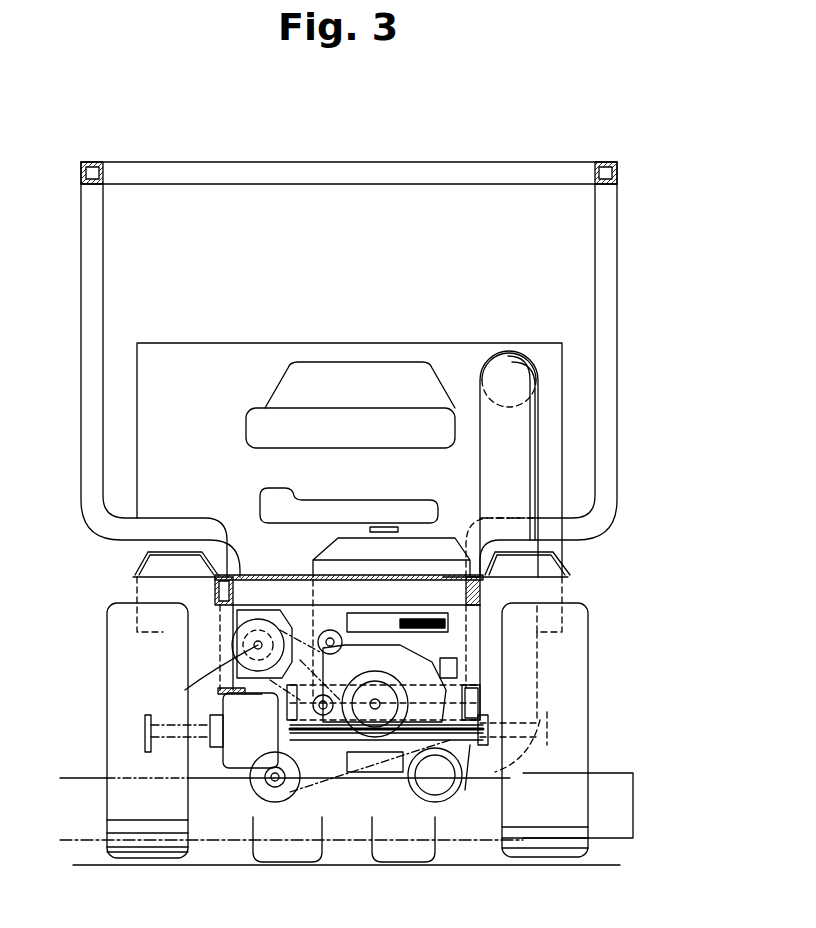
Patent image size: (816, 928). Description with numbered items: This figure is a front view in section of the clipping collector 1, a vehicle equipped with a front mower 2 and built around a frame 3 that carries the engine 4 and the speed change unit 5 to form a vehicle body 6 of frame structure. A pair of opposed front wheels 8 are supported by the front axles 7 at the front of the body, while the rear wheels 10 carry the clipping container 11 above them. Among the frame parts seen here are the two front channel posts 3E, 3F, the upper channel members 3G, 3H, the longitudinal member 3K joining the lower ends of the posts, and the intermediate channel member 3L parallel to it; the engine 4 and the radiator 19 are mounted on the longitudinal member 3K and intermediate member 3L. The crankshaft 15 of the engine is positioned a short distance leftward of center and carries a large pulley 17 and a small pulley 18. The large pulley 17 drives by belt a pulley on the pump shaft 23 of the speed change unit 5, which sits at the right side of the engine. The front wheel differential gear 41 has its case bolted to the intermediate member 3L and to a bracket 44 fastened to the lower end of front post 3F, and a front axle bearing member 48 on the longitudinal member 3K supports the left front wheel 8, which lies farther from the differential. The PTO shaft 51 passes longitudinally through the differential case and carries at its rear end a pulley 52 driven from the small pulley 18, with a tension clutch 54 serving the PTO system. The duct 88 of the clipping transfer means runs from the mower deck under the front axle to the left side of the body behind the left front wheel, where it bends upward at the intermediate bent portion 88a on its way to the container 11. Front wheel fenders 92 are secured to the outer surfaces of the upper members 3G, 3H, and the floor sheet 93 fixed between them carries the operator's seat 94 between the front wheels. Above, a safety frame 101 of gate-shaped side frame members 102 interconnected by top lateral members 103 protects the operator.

The clipping collector 1 is at (374, 339).
The front mower 2 is at (607, 772).
The frame 3 is at (352, 622).
The front channel post 3E is at (480, 667).
The front channel post 3F is at (225, 615).
The upper channel member 3G is at (480, 618).
The upper channel member 3H is at (228, 575).
The longitudinal member 3K is at (483, 698).
The intermediate channel member 3L is at (300, 705).
The engine 4 is at (378, 753).
The speed change unit 5 is at (258, 603).
The vehicle body 6 is at (388, 783).
The front axle 7 is at (470, 760).
The front wheel 8 is at (585, 635).
The rear wheel 10 is at (385, 832).
The clipping container 11 is at (478, 345).
The crankshaft 15 is at (378, 703).
The large pulley 17 is at (368, 662).
The small pulley 18 is at (388, 685).
The radiator 19 is at (347, 538).
The pump shaft 23 is at (206, 673).
The front wheel differential gear 41 is at (235, 755).
The bracket 44 is at (238, 696).
The front axle bearing member 48 is at (480, 750).
The PTO shaft 51 is at (274, 790).
The pulley 52 is at (294, 789).
The tension clutch 54 is at (300, 733).
The duct 88 is at (538, 458).
The intermediate bent portion 88a is at (520, 748).
The front wheel fender 92 is at (560, 570).
The floor sheet 93 is at (295, 575).
The operator's seat 94 is at (365, 360).
The safety frame 101 is at (532, 160).
The side frame member 102 is at (103, 296).
The top lateral member 103 is at (500, 184).